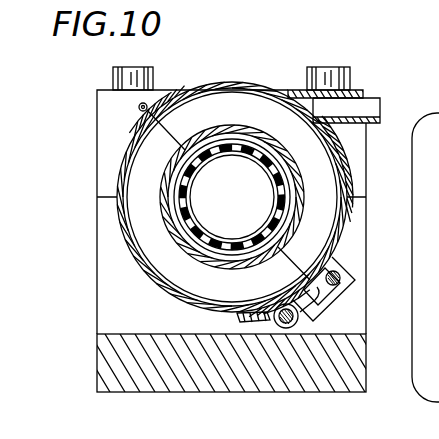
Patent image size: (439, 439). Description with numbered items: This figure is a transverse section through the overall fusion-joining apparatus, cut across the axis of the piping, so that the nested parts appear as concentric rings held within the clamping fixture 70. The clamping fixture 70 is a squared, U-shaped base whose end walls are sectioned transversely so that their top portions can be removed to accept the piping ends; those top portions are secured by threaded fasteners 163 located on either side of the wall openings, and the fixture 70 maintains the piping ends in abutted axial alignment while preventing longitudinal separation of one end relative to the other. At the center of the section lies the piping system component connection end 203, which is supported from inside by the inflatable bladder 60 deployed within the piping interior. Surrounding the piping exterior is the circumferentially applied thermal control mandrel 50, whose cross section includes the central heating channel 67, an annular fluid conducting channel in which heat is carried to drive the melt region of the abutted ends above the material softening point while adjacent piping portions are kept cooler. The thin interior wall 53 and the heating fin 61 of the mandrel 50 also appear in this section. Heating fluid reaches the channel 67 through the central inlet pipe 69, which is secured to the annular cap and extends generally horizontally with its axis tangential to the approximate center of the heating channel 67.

The thermal control mandrel 50 is at (115, 232).
The thin interior wall 53 is at (183, 248).
The inflatable bladder 60 is at (258, 176).
The heating fin 61 is at (140, 175).
The central heating channel 67 is at (120, 163).
The central inlet pipe 69 is at (370, 108).
The clamping fixture 70 is at (141, 395).
The threaded fasteners 163 is at (155, 83).
The piping system component connection end 203 is at (226, 138).